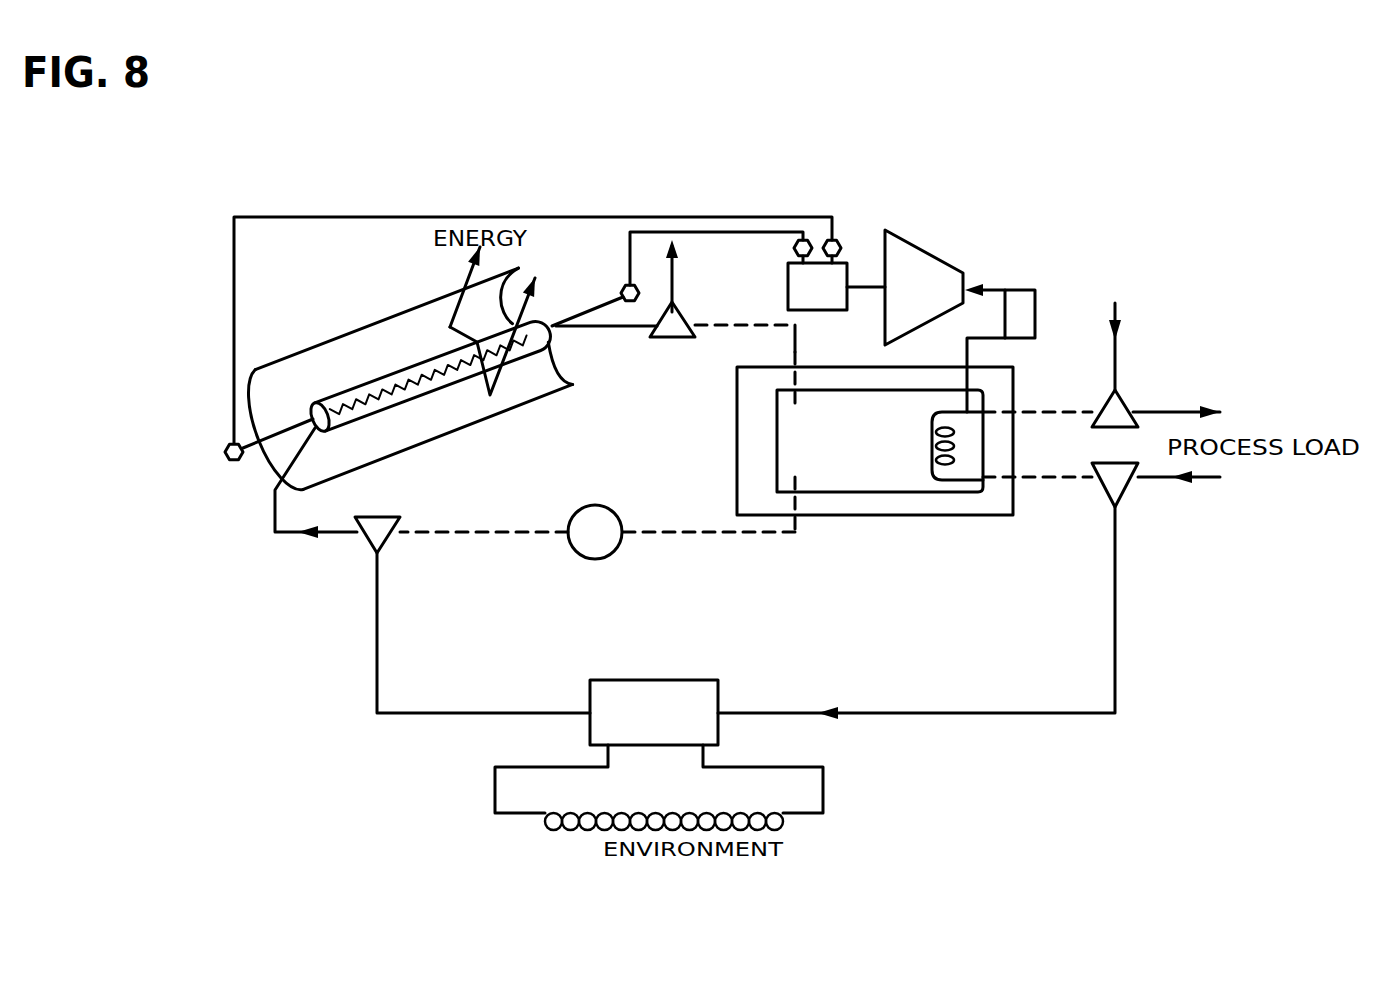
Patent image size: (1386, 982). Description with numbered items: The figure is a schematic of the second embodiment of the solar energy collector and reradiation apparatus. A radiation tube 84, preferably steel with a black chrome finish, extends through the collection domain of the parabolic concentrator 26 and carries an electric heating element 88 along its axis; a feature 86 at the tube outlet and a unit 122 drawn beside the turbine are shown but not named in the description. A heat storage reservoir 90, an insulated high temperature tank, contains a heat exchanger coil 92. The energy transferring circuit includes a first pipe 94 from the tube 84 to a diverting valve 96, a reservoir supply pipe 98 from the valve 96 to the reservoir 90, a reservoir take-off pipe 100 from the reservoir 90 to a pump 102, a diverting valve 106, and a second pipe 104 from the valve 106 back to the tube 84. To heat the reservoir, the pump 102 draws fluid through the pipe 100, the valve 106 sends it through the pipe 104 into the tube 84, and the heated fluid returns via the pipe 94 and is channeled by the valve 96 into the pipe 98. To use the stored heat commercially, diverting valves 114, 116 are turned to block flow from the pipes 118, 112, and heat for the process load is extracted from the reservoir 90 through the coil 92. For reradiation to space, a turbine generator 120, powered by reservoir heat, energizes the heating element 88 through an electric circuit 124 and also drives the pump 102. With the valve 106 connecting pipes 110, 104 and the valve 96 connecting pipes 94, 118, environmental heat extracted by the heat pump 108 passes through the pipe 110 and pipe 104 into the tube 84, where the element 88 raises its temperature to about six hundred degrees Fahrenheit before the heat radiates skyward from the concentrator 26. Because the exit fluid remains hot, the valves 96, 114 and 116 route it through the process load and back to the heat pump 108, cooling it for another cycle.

The parabolic concentrator 26 is at (450, 410).
The radiation tube 84 is at (400, 370).
The receiver tube outlet 86 is at (550, 347).
The electric heating element 88 is at (353, 407).
The heat storage reservoir 90 is at (865, 467).
The heat exchanger 92 is at (932, 470).
The first pipe 94 is at (628, 326).
The diverting valve 96 is at (680, 314).
The reservoir supply pipe 98 is at (797, 352).
The reservoir take-off pipe 100 is at (697, 506).
The pump 102 is at (570, 515).
The second pipe 104 is at (275, 503).
The diverting valve 106 is at (370, 542).
The heat pump 108 is at (718, 690).
The pipe 110 is at (380, 637).
The pipe 112 is at (960, 718).
The diverting valve 114 is at (1120, 400).
The diverting valve 116 is at (1120, 490).
The pipe 118 is at (1118, 332).
The turbine generator 120 is at (923, 248).
The generator/control unit 122 is at (835, 275).
The electric circuit 124 is at (575, 217).